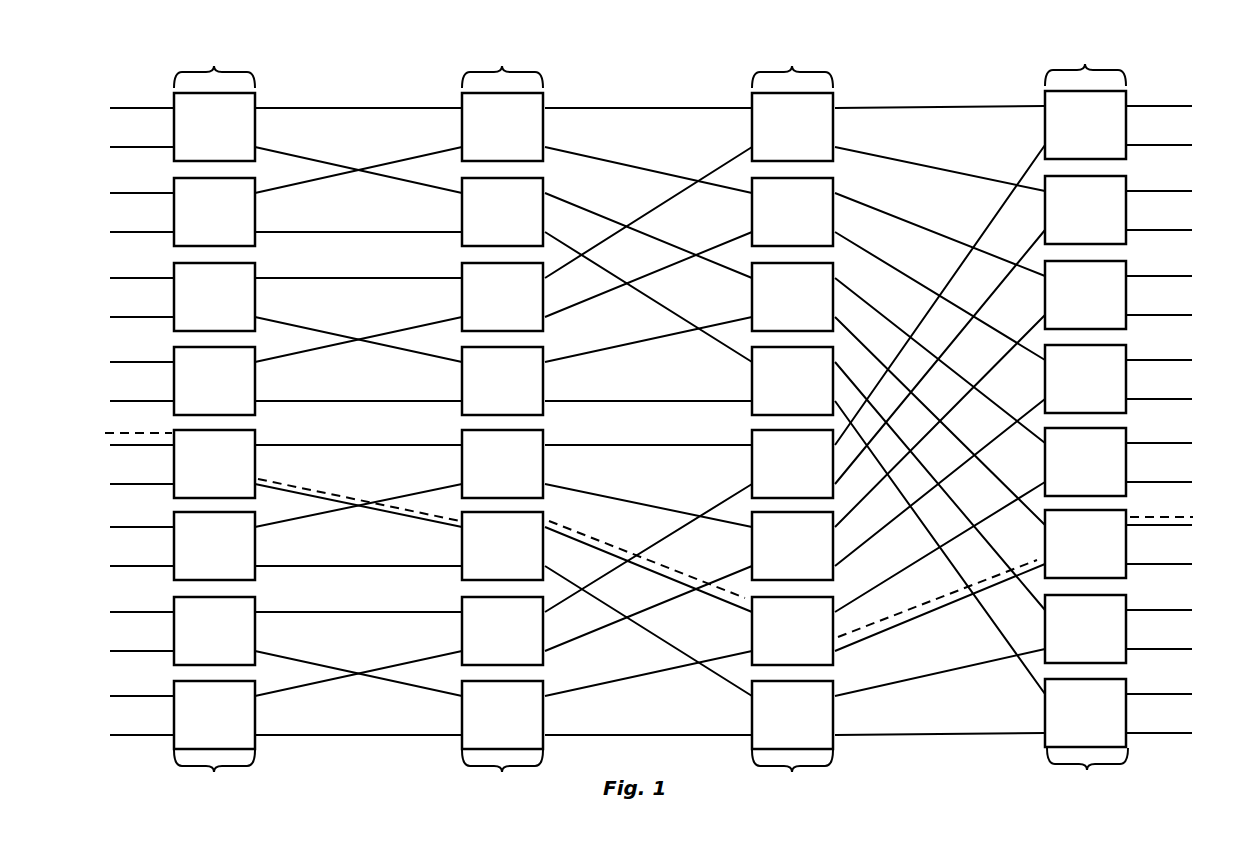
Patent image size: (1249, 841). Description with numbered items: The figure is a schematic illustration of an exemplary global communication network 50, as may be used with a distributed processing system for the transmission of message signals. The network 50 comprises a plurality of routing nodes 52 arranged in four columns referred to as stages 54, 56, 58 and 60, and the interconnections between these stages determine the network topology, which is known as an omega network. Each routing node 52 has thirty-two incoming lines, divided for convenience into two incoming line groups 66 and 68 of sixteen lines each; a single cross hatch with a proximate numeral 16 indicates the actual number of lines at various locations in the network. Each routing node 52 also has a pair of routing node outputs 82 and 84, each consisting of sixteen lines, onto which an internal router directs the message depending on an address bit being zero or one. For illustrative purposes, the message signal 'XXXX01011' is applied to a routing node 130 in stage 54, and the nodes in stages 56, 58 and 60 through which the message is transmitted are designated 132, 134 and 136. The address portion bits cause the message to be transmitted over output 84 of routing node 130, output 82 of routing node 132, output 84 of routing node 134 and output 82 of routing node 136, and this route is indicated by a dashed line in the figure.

The number of lines indicator 16 is at (1172, 137).
The global communication network 50 is at (998, 793).
The routing node 52 is at (674, 401).
The first stage 54 is at (214, 419).
The second stage 56 is at (502, 419).
The third stage 58 is at (792, 419).
The fourth stage 60 is at (1086, 416).
The first incoming line group 66 is at (157, 108).
The second incoming line group 68 is at (158, 147).
The first routing node output 82 is at (282, 106).
The second routing node output 84 is at (277, 151).
The routing node in first stage 130 is at (258, 432).
The routing node in second stage 132 is at (462, 547).
The routing node in third stage 134 is at (838, 622).
The routing node in fourth stage 136 is at (1045, 540).